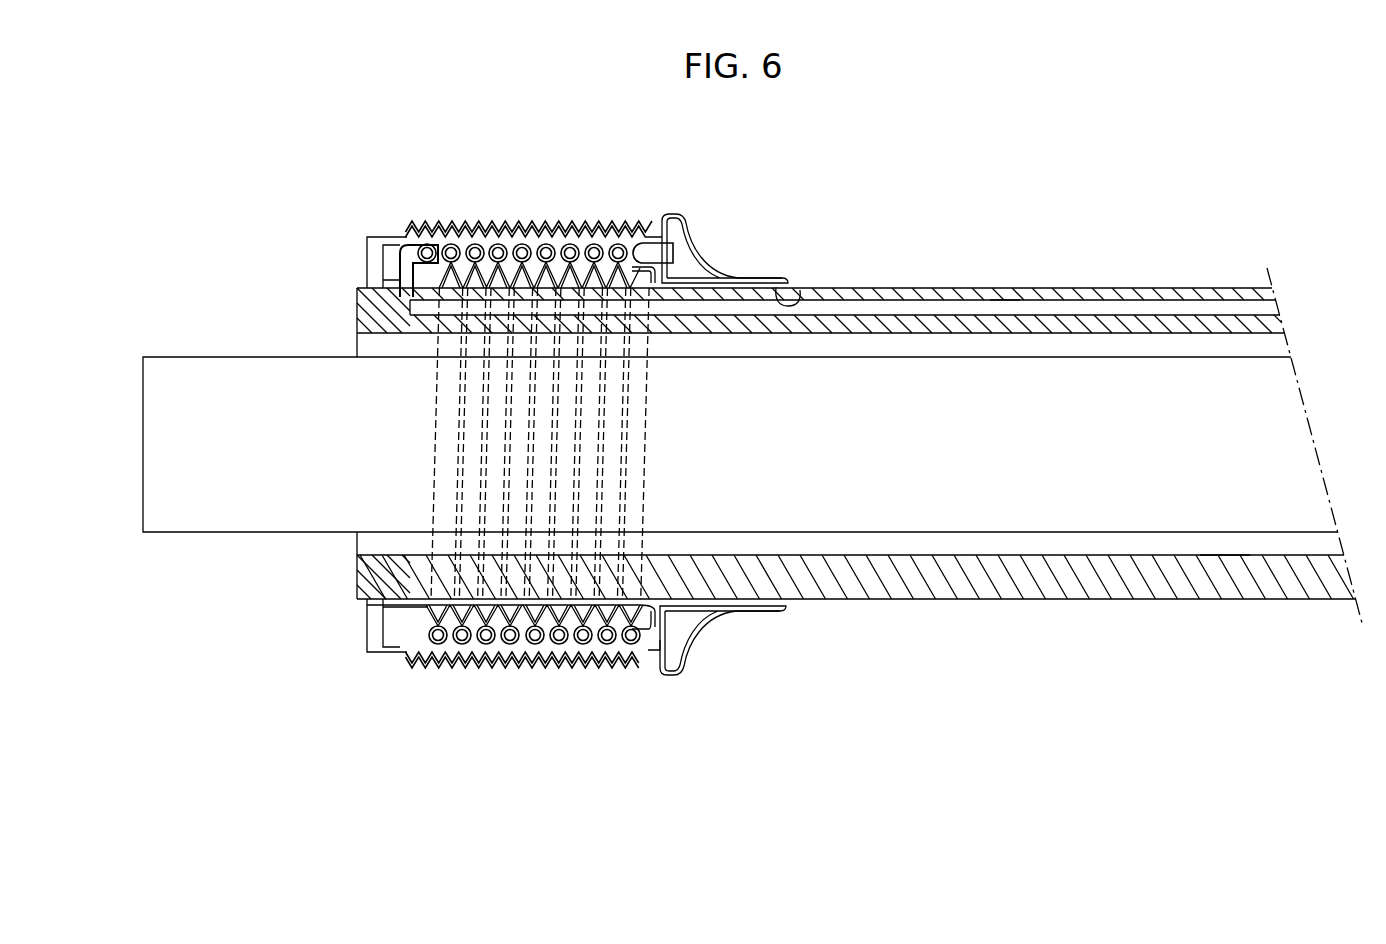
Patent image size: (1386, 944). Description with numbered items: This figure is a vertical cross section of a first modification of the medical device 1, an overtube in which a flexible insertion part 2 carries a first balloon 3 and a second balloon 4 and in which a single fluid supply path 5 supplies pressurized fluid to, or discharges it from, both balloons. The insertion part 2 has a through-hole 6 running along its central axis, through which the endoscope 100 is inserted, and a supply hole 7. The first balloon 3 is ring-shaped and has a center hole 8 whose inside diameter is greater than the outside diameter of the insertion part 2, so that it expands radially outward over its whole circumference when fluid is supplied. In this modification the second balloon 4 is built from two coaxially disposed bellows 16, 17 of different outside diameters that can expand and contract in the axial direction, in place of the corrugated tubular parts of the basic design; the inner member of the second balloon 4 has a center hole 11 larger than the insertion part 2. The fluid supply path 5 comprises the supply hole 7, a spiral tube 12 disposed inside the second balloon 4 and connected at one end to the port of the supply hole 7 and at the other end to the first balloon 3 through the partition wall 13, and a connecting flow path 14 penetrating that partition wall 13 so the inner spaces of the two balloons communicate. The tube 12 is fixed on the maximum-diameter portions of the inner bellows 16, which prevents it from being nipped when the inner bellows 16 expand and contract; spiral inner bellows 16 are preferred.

The medical device 1 is at (254, 284).
The endoscope 100 is at (141, 413).
The insertion part 2 is at (928, 286).
The first balloon 3 is at (663, 210).
The second balloon 4 is at (461, 216).
The fluid supply path 5 is at (403, 310).
The through-hole 6 is at (1217, 556).
The supply hole 7 is at (1013, 297).
The center hole 8 is at (798, 292).
The center hole 11 is at (547, 272).
The tube 12 is at (478, 637).
The partition wall 13 is at (673, 642).
The connecting flow path 14 is at (660, 640).
The inner bellows 16 is at (557, 642).
The outer bellows 17 is at (527, 668).